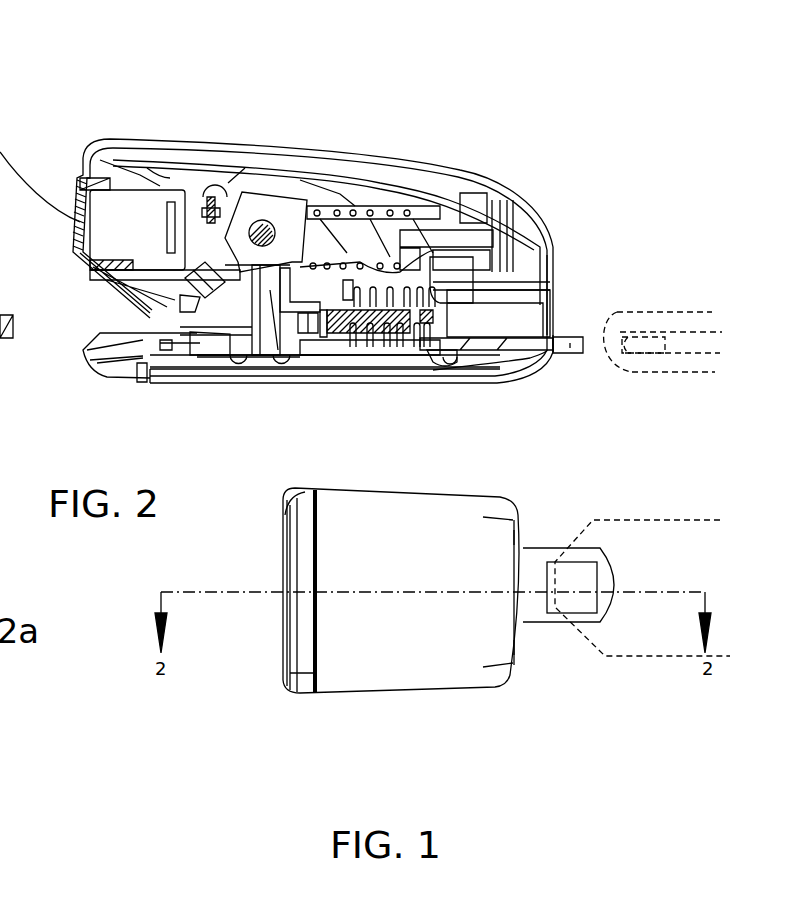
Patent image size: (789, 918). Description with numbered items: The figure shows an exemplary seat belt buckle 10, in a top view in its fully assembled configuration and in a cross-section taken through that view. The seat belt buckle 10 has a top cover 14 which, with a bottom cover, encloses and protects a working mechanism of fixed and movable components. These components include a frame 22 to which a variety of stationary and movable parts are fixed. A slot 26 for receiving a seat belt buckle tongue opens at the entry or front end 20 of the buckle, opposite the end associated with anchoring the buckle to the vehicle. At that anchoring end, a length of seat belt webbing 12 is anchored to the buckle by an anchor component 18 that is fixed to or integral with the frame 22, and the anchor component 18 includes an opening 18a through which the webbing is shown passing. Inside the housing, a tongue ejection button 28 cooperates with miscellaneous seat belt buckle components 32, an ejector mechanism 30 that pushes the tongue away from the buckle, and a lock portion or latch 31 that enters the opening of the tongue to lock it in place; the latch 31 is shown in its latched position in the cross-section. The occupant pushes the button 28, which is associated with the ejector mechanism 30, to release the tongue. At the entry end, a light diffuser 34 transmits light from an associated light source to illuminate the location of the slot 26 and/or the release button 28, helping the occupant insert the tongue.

In FIG. 1, the seat belt buckle 10 is at (366, 716).
In FIG. 2, the seat belt webbing 12 is at (680, 320).
In FIG. 1, the seat belt webbing 12 is at (623, 520).
In FIG. 2, the top cover 14 is at (245, 141).
In FIG. 1, the top cover 14 is at (408, 487).
In FIG. 2, the anchor component 18 is at (576, 338).
In FIG. 1, the anchor component 18 is at (533, 556).
In FIG. 1, the connector opening 18a is at (575, 608).
In FIG. 2, the front end 20 is at (90, 318).
In FIG. 1, the front end 20 is at (280, 548).
In FIG. 2, the frame 22 is at (197, 232).
In FIG. 2, the slot 26 is at (132, 322).
In FIG. 1, the ejection button 28 is at (290, 652).
In FIG. 2, the ejector mechanism 30 is at (320, 350).
In FIG. 2, the latch 31 is at (252, 368).
In FIG. 2, the miscellaneous seat belt buckle components 32 is at (347, 253).
In FIG. 2, the light diffuser 34 is at (77, 130).